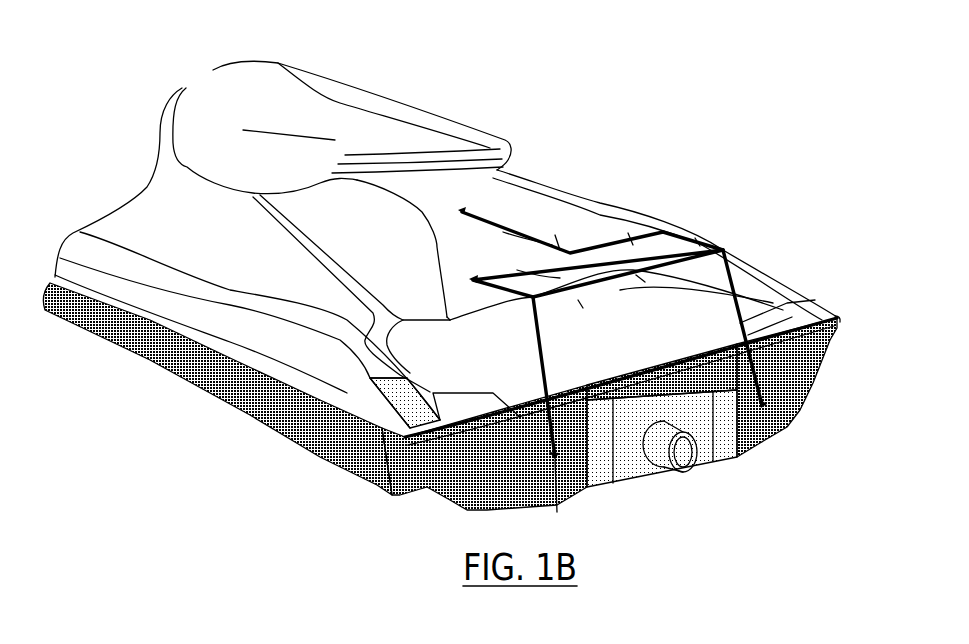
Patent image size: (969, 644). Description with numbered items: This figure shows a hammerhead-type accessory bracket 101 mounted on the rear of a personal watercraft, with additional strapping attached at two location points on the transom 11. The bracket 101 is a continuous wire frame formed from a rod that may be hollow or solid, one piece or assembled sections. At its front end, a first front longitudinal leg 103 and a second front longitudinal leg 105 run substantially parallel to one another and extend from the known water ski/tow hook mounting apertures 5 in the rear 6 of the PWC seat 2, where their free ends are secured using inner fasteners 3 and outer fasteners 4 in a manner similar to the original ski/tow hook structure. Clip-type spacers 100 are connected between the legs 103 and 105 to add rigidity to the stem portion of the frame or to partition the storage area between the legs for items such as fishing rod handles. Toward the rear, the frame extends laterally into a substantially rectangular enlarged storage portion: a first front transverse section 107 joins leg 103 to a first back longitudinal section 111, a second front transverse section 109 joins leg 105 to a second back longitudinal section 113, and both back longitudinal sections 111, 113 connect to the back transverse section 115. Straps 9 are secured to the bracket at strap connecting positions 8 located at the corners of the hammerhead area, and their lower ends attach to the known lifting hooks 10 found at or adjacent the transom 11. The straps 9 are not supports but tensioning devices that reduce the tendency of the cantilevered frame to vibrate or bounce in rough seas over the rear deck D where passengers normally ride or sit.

The seat 2 is at (437, 120).
The inner fasteners 3 is at (590, 182).
The outer fasteners 4 is at (590, 182).
The water ski/tow hook mounting apertures 5 is at (478, 205).
The rear of the PWC seat 6 is at (368, 249).
The strap connecting positions 8 is at (725, 249).
The straps 9 is at (746, 302).
The lifting hooks 10 is at (557, 512).
The transom 11 is at (757, 443).
The clip-type spacers 100 is at (513, 220).
The bracket 101 is at (640, 278).
The first front longitudinal leg 103 is at (557, 232).
The second front longitudinal leg 105 is at (512, 229).
The first front transverse section 107 is at (628, 233).
The second front transverse section 109 is at (517, 270).
The first back longitudinal section 111 is at (698, 235).
The second back longitudinal section 113 is at (500, 310).
The back transverse section 115 is at (580, 303).
The rear deck D is at (620, 432).